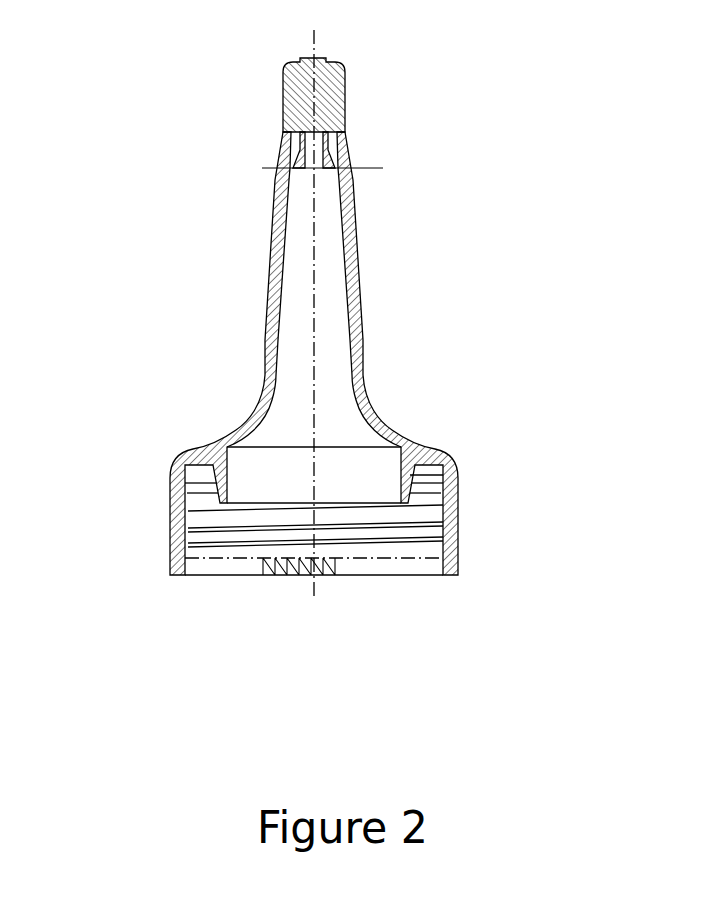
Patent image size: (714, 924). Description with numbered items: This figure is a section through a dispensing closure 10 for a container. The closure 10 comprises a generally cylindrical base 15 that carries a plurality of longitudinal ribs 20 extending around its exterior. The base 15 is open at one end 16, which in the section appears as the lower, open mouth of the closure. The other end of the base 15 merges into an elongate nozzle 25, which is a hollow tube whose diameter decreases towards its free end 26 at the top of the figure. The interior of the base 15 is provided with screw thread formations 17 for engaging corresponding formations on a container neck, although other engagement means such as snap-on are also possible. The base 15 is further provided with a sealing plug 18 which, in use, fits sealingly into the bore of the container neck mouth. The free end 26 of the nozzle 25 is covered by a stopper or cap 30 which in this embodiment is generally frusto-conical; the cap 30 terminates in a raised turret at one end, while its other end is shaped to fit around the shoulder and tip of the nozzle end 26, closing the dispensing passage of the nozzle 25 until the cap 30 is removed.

The dispensing closure 10 is at (317, 334).
The base 15 is at (315, 353).
The open end 16 is at (296, 610).
The screw thread formations 17 is at (252, 534).
The sealing plug 18 is at (255, 490).
The longitudinal ribs 20 is at (452, 353).
The nozzle 25 is at (315, 353).
The free end 26 is at (259, 155).
The cap 30 is at (257, 95).